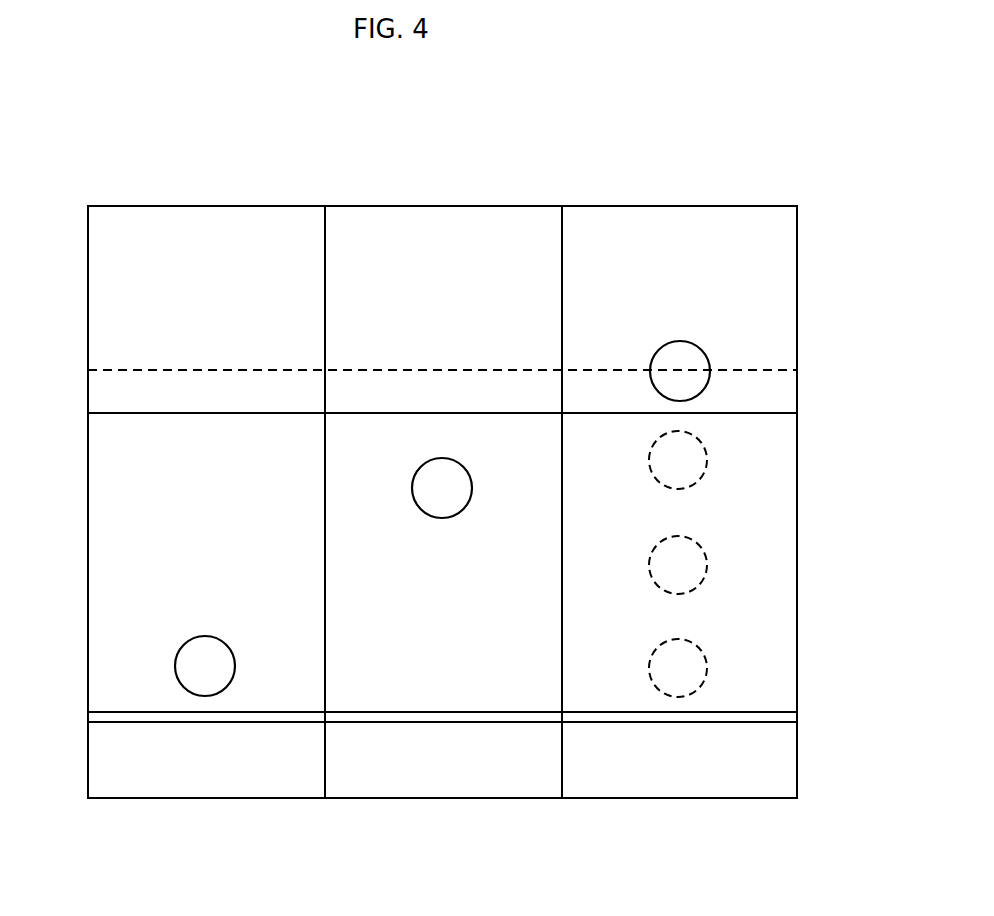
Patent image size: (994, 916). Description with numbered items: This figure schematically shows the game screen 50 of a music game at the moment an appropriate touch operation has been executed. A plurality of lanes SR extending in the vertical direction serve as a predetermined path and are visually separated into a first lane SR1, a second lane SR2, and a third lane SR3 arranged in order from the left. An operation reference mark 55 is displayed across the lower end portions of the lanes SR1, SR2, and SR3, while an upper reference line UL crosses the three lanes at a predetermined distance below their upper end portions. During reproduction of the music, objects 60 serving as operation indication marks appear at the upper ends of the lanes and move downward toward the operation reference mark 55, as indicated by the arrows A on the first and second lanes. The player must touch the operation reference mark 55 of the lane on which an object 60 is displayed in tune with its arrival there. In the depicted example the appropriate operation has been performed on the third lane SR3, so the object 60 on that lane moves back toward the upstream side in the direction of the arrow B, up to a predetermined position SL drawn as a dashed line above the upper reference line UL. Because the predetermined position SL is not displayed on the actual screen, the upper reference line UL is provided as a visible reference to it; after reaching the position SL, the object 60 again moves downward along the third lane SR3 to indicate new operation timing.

The game screen 50 is at (603, 191).
The first lane SR1 is at (277, 252).
The second lane SR2 is at (512, 252).
The third lane SR3 is at (754, 253).
The lanes SR is at (232, 826).
The predetermined position SL is at (738, 370).
The upper reference line UL is at (752, 413).
The object 60 is at (680, 342).
The operation reference mark 55 is at (757, 718).
The arrow A is at (421, 438).
The arrow B is at (726, 580).